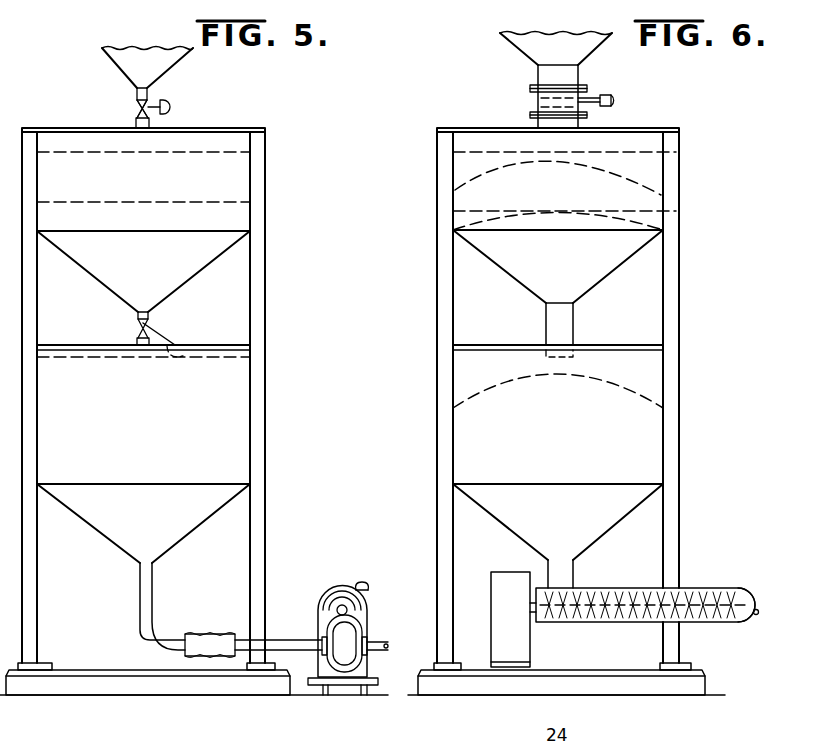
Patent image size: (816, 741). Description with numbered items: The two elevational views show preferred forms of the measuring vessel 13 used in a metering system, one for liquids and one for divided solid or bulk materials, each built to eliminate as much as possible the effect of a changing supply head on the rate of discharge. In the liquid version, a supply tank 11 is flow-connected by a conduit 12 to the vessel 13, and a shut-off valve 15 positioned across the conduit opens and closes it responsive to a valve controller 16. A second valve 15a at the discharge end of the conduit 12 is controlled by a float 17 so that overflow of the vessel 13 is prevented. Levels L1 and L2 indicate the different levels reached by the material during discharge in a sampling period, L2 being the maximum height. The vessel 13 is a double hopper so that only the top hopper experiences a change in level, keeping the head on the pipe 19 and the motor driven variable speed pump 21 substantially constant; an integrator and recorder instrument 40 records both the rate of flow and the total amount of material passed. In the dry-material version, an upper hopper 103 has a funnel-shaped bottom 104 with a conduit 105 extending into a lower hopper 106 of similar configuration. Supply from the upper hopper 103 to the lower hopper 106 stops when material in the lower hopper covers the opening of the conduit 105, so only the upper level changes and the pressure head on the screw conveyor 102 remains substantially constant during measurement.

In FIG. 5, the supply tank 11 is at (150, 74).
In FIG. 6, the supply tank 11 is at (569, 56).
In FIG. 5, the conduit 12 is at (150, 95).
In FIG. 6, the conduit 12 is at (545, 74).
In FIG. 5, the measuring vessel 13 is at (270, 257).
In FIG. 6, the measuring vessel 13 is at (436, 290).
In FIG. 5, the shut-off valve 15 is at (136, 116).
In FIG. 6, the shut-off valve 15 is at (580, 100).
In FIG. 5, the second valve 15a is at (137, 330).
In FIG. 5, the valve controller 16 is at (170, 107).
In FIG. 6, the valve controller 16 is at (618, 100).
In FIG. 5, the float 17 is at (176, 344).
In FIG. 5, the pipe 19 is at (140, 601).
In FIG. 6, the pipe 19 is at (720, 590).
In FIG. 5, the motor driven variable speed pump 21 is at (372, 620).
In FIG. 5, the integrator and recorder instrument 40 is at (373, 585).
In FIG. 5, the level L-1 L1 is at (162, 150).
In FIG. 6, the level L-1 L1 is at (578, 150).
In FIG. 5, the level L-2 L2 is at (163, 200).
In FIG. 6, the level L-2 L2 is at (578, 209).
In FIG. 6, the screw conveyor 102 is at (730, 626).
In FIG. 6, the upper hopper 103 is at (656, 180).
In FIG. 6, the funnel-shaped bottom 104 is at (615, 255).
In FIG. 6, the conduit 105 is at (568, 322).
In FIG. 6, the lower hopper 106 is at (650, 448).